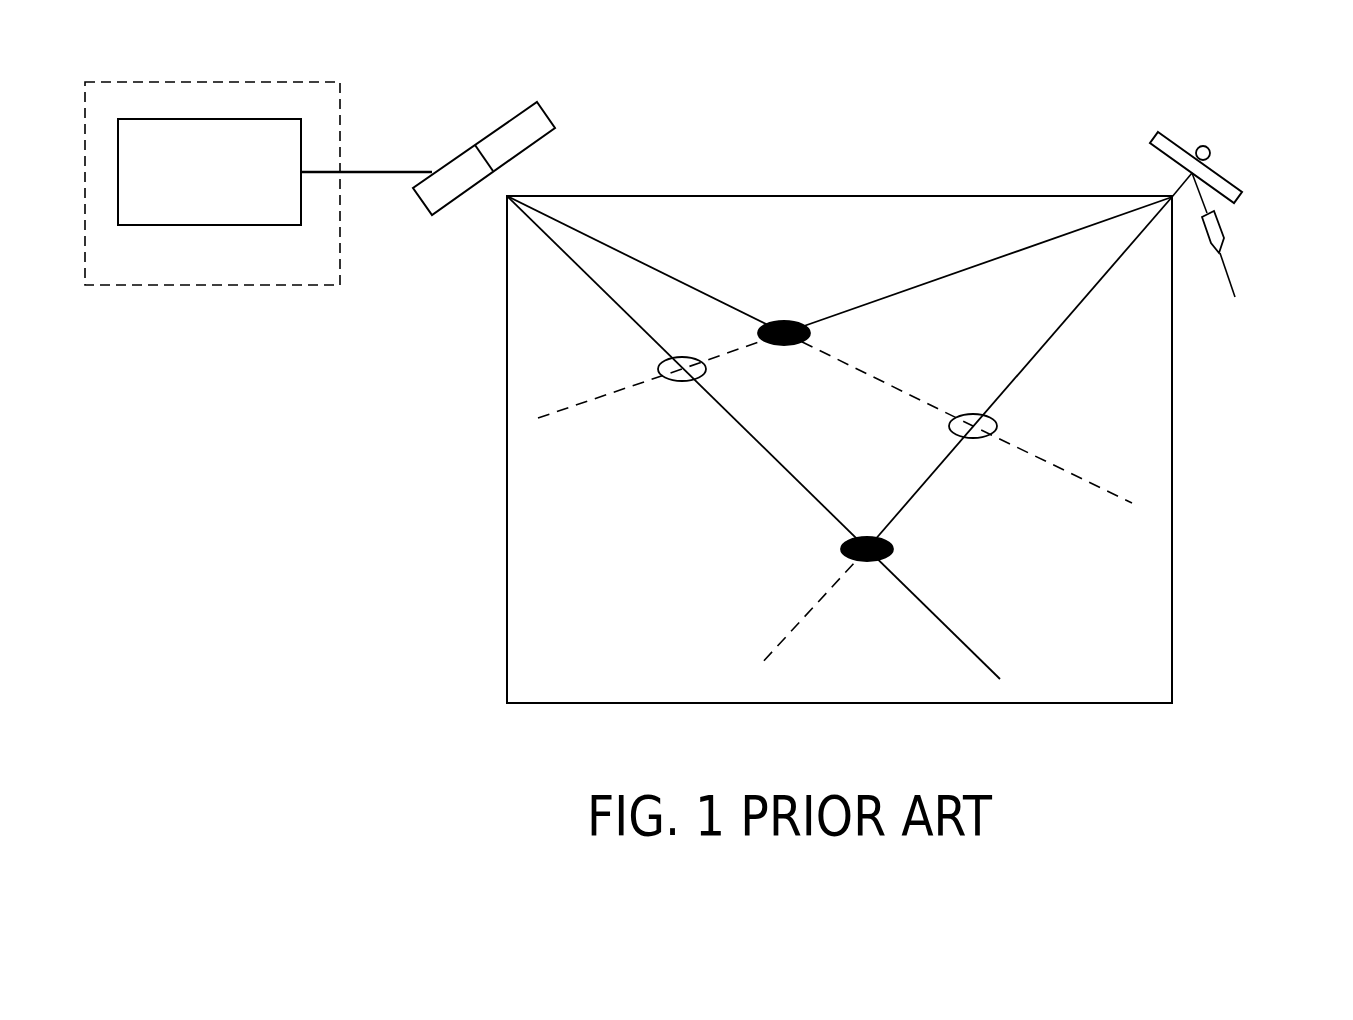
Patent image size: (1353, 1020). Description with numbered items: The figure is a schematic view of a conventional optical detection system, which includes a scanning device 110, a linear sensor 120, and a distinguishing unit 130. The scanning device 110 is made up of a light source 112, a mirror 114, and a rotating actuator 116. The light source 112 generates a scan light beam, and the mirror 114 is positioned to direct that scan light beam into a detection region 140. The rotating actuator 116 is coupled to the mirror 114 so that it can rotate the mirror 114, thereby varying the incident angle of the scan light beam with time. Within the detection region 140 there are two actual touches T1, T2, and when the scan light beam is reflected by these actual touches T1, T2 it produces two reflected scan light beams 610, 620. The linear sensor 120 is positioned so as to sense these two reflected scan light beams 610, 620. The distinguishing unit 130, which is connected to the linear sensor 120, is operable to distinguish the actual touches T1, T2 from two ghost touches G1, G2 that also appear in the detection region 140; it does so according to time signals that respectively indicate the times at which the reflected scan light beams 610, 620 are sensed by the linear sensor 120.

The scanning device 110 is at (1238, 162).
The light source 112 is at (1219, 230).
The mirror 114 is at (1238, 188).
The rotating actuator 116 is at (1210, 152).
The linear sensor 120 is at (562, 114).
The distinguishing unit 130 is at (210, 285).
The detection region 140 is at (558, 578).
The reflected scan light beam 610 is at (597, 286).
The reflected scan light beam 620 is at (647, 262).
The actual touch T1 is at (867, 562).
The actual touch T2 is at (783, 320).
The ghost touch G1 is at (658, 366).
The ghost touch G2 is at (997, 422).